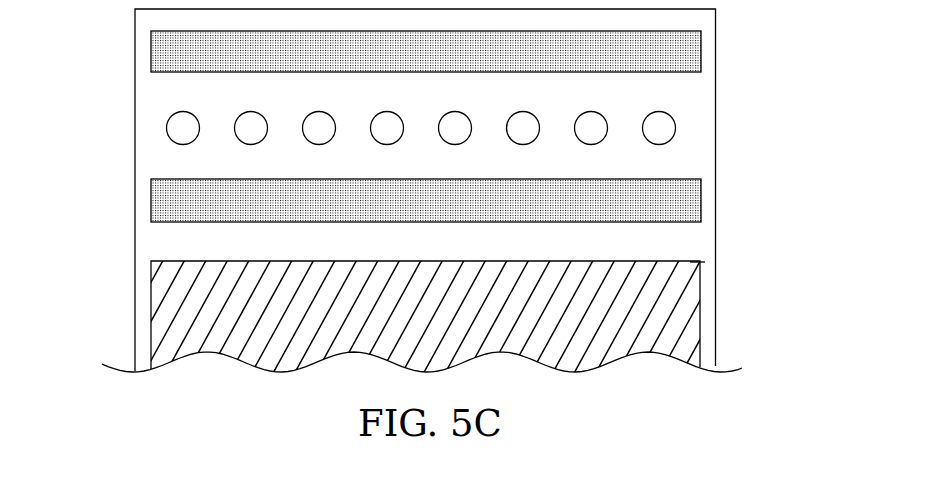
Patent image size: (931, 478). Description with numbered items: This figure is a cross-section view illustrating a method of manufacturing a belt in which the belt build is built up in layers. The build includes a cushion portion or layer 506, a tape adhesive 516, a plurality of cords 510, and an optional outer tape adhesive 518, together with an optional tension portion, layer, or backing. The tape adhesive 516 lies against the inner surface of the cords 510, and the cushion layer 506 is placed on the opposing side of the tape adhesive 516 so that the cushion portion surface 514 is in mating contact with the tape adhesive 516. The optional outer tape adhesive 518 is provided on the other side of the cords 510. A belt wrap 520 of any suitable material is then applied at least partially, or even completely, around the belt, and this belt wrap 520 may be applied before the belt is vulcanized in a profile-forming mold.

The cushion layer 506 is at (151, 317).
The cords 510 is at (166, 133).
The cushion portion surface 514 is at (690, 262).
The tape adhesive 516 is at (150, 200).
The outer tape adhesive 518 is at (150, 50).
The belt wrap 520 is at (135, 228).